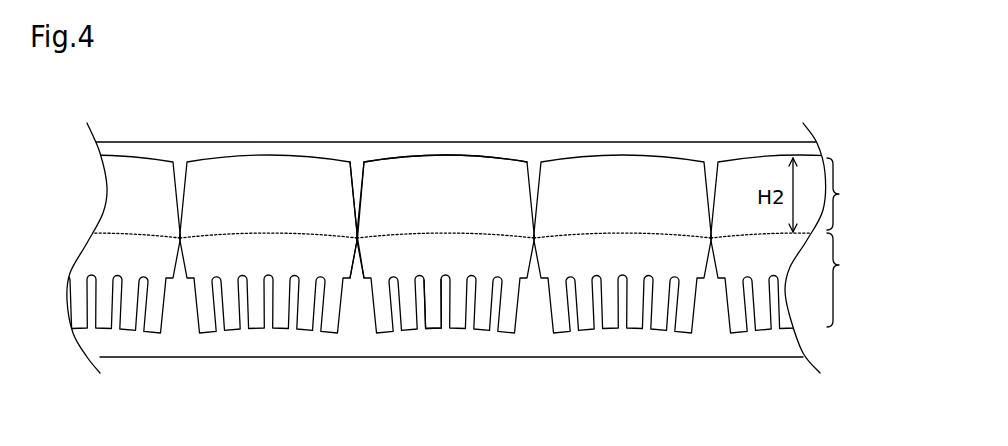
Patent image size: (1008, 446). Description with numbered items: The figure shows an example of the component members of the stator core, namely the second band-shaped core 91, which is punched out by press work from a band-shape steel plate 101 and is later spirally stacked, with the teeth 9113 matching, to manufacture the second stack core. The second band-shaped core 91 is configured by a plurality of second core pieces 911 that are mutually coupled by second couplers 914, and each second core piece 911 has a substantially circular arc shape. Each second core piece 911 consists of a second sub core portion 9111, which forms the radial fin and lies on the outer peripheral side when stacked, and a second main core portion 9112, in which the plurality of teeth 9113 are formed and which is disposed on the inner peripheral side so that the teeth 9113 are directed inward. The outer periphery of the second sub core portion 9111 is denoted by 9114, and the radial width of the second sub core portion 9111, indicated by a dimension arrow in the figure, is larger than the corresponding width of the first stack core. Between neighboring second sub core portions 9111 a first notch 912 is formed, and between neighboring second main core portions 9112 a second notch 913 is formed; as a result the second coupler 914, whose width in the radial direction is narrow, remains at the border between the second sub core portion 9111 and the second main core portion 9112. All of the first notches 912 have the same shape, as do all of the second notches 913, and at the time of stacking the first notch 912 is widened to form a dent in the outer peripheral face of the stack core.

The second band-shaped core 91 is at (446, 193).
The band-shape steel plate 101 is at (667, 142).
The second core piece 911 is at (585, 162).
The second sub core portion 9111 is at (865, 194).
The second main core portion 9112 is at (865, 280).
The teeth 9113 is at (432, 312).
The outer periphery of the second sub core portion 9114 is at (388, 161).
The first notch 912 is at (362, 151).
The second notch 913 is at (357, 275).
The second coupler 914 is at (362, 236).